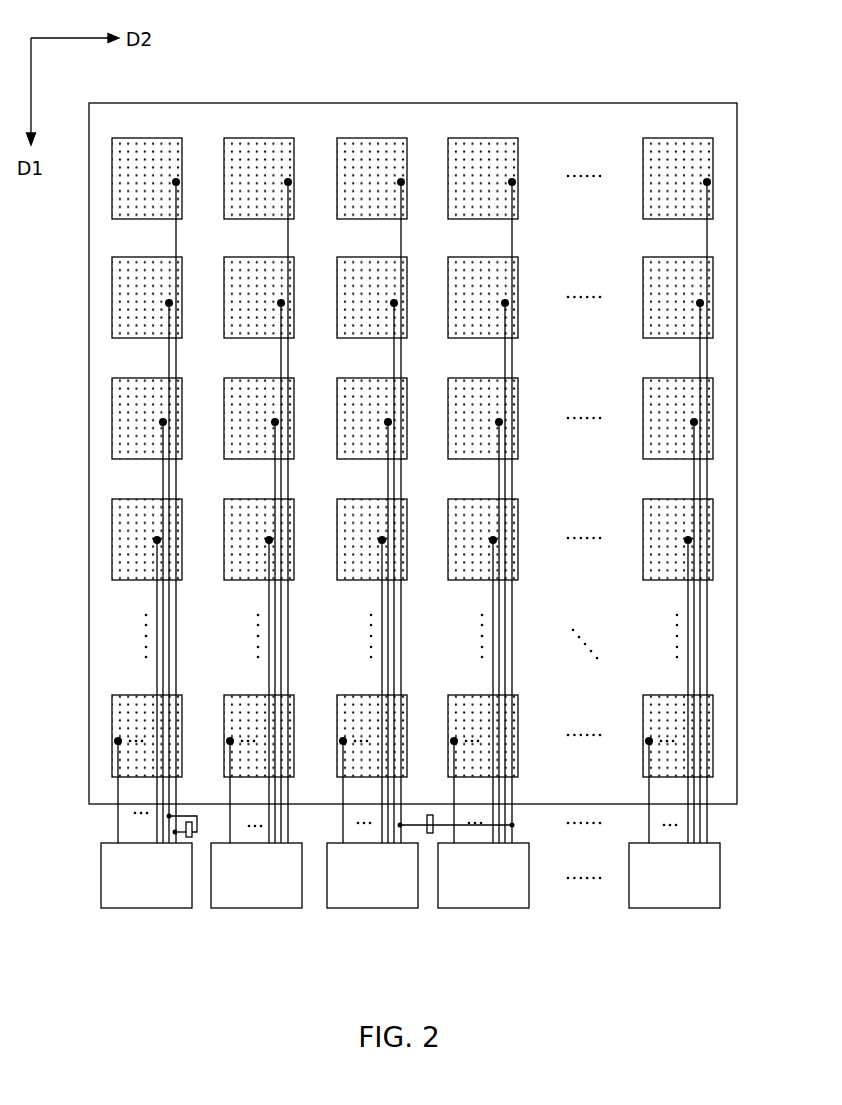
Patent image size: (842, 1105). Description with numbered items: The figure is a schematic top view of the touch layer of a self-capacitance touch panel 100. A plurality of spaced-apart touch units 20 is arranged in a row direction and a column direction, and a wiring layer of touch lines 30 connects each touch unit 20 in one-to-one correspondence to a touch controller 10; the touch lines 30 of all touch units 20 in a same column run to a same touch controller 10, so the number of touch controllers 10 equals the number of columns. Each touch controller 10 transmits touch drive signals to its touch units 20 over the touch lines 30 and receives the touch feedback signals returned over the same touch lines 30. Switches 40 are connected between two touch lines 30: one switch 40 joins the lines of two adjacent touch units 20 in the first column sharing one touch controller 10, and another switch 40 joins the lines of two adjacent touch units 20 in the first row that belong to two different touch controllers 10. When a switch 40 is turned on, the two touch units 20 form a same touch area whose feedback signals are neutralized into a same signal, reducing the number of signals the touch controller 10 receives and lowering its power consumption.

The touch panel 100 is at (428, 28).
The touch controller 10 is at (139, 868).
The touch unit 20 is at (141, 155).
The touch line 30 is at (708, 228).
The switch 40 is at (190, 838).